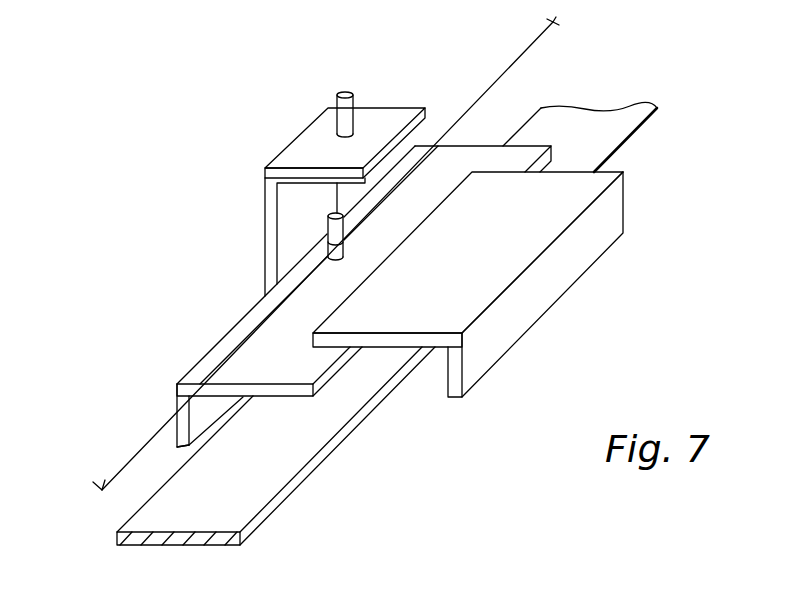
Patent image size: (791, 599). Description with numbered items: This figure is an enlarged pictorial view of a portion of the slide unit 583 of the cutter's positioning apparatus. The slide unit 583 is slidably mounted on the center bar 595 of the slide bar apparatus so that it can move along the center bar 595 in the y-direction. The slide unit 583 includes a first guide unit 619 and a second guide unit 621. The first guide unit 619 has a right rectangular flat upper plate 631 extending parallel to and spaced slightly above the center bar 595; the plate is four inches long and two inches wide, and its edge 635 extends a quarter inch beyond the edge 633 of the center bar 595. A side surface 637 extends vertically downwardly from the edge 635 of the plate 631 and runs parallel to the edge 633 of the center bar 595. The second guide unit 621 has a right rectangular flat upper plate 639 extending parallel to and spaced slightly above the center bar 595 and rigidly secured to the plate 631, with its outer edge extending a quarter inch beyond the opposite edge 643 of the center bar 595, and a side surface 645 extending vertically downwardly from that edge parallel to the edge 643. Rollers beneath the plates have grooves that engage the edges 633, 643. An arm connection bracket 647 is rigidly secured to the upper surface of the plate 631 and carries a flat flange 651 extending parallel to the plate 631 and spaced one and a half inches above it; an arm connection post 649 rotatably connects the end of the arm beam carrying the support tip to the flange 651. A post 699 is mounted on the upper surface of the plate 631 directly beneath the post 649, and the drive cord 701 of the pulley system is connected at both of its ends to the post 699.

The drive cord 701 is at (531, 50).
The arm connection post 649 is at (340, 100).
The flat flange 651 is at (404, 104).
The arm connection bracket 647 is at (265, 203).
The post 699 is at (345, 250).
The right rectangular flat upper plate 631 is at (293, 312).
The first guide unit 619 is at (228, 330).
The edge 635 is at (187, 375).
The side surface 637 is at (175, 435).
The edge 633 is at (130, 518).
The center bar 595 is at (313, 467).
The side surface 645 is at (462, 350).
The slide unit 583 is at (612, 275).
The second guide unit 621 is at (624, 208).
The right rectangular flat upper plate 639 is at (600, 162).
The edge 643 is at (650, 128).